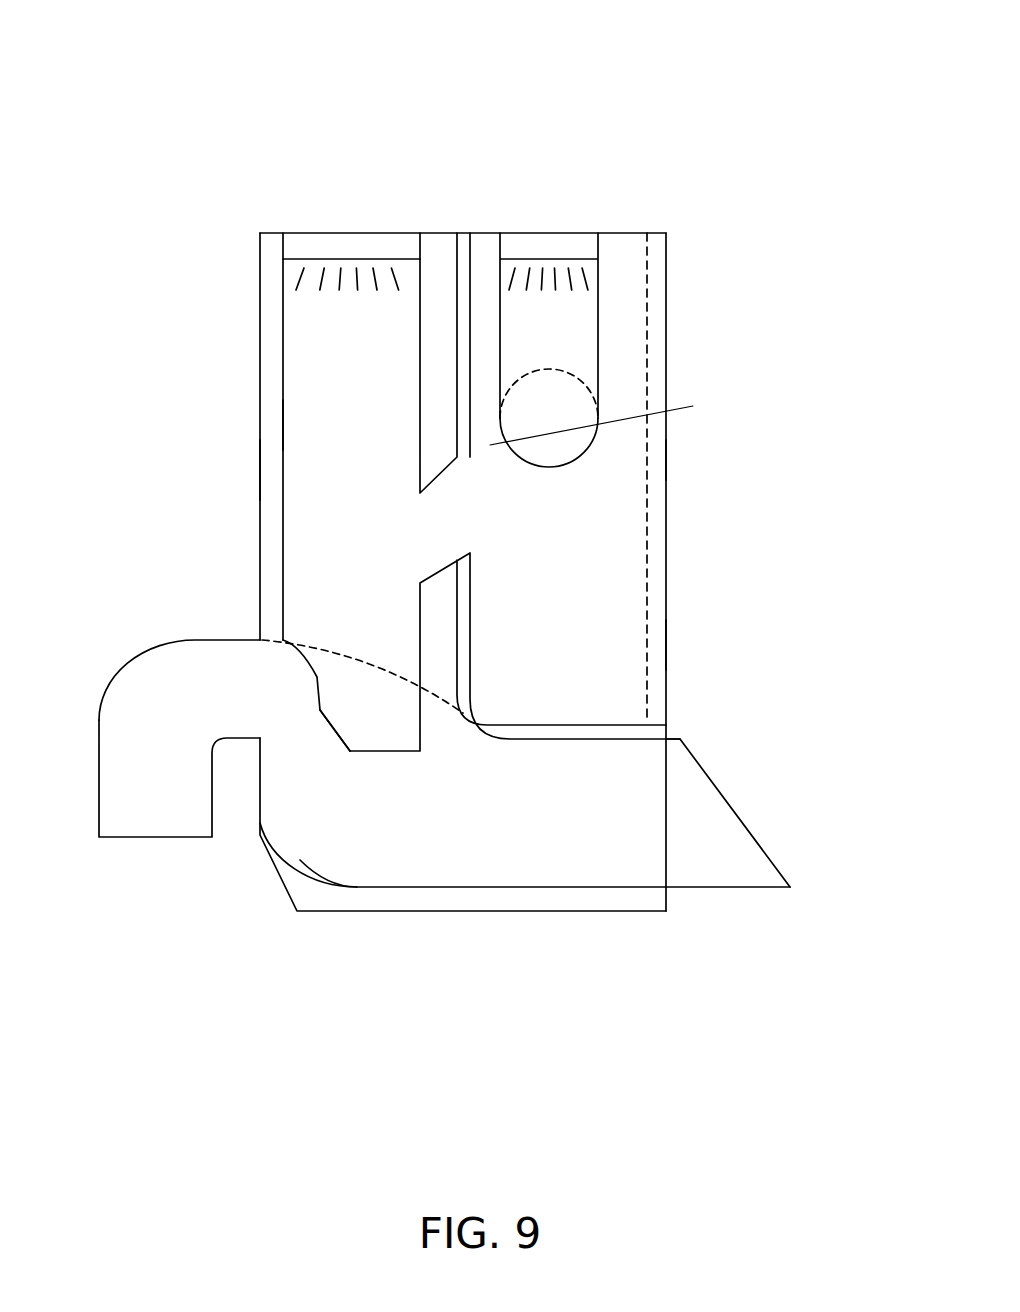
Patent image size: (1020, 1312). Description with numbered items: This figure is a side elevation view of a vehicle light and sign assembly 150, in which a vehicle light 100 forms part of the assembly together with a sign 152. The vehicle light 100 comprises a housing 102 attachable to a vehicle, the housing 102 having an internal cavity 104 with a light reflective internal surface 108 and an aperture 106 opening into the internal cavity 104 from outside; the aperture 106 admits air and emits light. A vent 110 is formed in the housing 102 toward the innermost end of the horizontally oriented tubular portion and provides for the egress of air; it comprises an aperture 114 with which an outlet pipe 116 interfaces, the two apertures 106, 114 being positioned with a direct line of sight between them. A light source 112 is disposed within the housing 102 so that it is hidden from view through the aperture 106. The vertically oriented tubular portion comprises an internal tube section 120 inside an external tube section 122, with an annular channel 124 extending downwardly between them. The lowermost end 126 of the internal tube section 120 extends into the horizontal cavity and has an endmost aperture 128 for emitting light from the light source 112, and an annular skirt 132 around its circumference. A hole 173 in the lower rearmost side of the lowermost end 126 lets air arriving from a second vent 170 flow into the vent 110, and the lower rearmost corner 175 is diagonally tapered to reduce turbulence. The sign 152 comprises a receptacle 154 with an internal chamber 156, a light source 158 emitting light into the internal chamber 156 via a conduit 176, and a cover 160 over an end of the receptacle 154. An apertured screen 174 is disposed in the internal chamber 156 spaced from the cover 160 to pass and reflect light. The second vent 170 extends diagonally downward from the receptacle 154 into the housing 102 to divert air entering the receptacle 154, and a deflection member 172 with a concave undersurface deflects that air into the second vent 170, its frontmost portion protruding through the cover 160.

The vehicle light 100 is at (260, 233).
The housing 102 is at (260, 280).
The internal cavity 104 is at (798, 818).
The aperture 106 is at (723, 798).
The light reflective internal surface 108 is at (442, 887).
The vent 110 is at (257, 697).
The light source 112 is at (345, 250).
The aperture 114 is at (260, 657).
The outlet pipe 116 is at (115, 718).
The internal tube section 120 is at (283, 425).
The external tube section 122 is at (260, 470).
The channel 124 is at (283, 345).
The lowermost end 126 is at (378, 715).
The endmost aperture 128 is at (378, 752).
The annular skirt 132 is at (435, 692).
The vehicle light and sign assembly 150 is at (491, 97).
The sign 152 is at (668, 462).
The receptacle 154 is at (666, 234).
The internal chamber 156 is at (607, 535).
The light source 158 is at (562, 250).
The cover 160 is at (668, 645).
The second vent 170 is at (440, 523).
The deflection member 172 is at (617, 408).
The hole 173 is at (317, 678).
The apertured screen 174 is at (647, 322).
The lower rearmost corner 175 is at (333, 730).
The conduit 176 is at (500, 300).